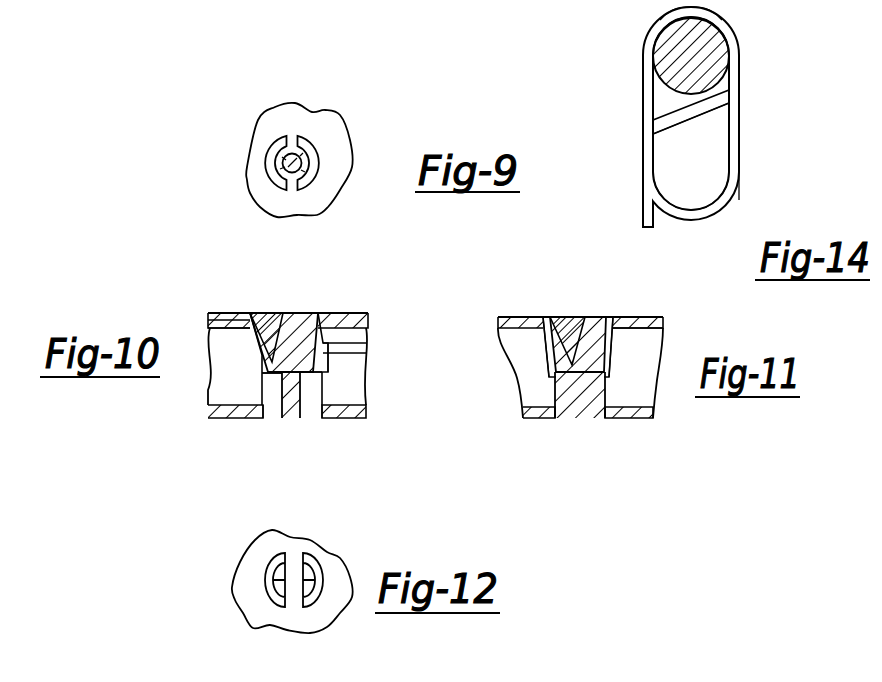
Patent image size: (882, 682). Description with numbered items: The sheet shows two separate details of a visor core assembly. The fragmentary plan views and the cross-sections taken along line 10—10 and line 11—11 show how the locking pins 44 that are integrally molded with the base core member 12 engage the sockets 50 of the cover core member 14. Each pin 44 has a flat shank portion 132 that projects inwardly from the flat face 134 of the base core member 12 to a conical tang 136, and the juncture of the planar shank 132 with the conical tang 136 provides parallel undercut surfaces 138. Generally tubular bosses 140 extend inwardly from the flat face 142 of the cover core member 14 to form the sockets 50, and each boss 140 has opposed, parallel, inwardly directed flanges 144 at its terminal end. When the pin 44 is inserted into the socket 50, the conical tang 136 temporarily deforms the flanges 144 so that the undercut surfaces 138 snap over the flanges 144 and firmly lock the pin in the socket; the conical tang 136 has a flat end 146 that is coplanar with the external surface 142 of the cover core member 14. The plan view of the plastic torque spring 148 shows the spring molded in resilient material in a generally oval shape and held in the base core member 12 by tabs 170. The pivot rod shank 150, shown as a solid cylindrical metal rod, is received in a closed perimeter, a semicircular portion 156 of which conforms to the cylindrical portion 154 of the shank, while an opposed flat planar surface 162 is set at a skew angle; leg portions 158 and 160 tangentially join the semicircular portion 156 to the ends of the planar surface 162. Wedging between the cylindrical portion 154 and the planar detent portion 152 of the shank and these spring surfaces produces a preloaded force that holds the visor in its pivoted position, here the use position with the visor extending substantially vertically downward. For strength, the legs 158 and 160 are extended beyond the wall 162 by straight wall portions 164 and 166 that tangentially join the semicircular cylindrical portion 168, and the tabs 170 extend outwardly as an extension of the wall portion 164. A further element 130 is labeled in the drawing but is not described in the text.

In FIG. 9, the section line 10— 10 is at (228, 165).
In FIG. 10, the section line 11— 11 is at (307, 272).
In FIG. 9, the base core member 12 is at (323, 124).
In FIG. 10, the base core member 12 is at (241, 411).
In FIG. 11, the base core member 12 is at (632, 424).
In FIG. 12, the base core member 12 is at (330, 617).
In FIG. 14, the base core member 12 is at (801, 30).
In FIG. 10, the cover core member 14 is at (370, 312).
In FIG. 11, the cover core member 14 is at (523, 315).
In FIG. 10, the locking pin 44 is at (305, 403).
In FIG. 11, the locking pin 44 is at (603, 387).
In FIG. 12, the locking pin 44 is at (268, 587).
In FIG. 10, the socket 50 is at (328, 363).
In FIG. 11, the socket 50 is at (622, 340).
In FIG. 14, the upper member 130 is at (721, 10).
In FIG. 9, the flat shank portion 132 is at (290, 136).
In FIG. 10, the flat shank portion 132 is at (282, 378).
In FIG. 11, the flat shank portion 132 is at (555, 420).
In FIG. 12, the flat shank portion 132 is at (310, 550).
In FIG. 10, the flat face of base core member 134 is at (332, 418).
In FIG. 11, the flat face of base core member 134 is at (628, 420).
In FIG. 14, the flat face of base core member 134 is at (613, 30).
In FIG. 9, the conical tang 136 is at (305, 148).
In FIG. 10, the conical tang 136 is at (315, 318).
In FIG. 11, the conical tang 136 is at (558, 317).
In FIG. 10, the undercut surfaces 138 is at (267, 374).
In FIG. 10, the tubular boss 140 is at (330, 342).
In FIG. 11, the tubular boss 140 is at (547, 350).
In FIG. 10, the flat face of cover core member 142 is at (243, 327).
In FIG. 11, the flat face of cover core member 142 is at (608, 317).
In FIG. 10, the flanges 144 is at (208, 320).
In FIG. 9, the flat end 146 is at (275, 173).
In FIG. 10, the flat end 146 is at (297, 312).
In FIG. 11, the flat end 146 is at (577, 317).
In FIG. 14, the torque spring 148 is at (742, 57).
In FIG. 14, the pivot rod shank 150 is at (679, 57).
In FIG. 14, the planar detent portion 152 is at (703, 32).
In FIG. 14, the cylindrical portion 154 is at (663, 84).
In FIG. 14, the semicircular portion 156 is at (678, 12).
In FIG. 14, the leg portion 158 is at (643, 82).
In FIG. 14, the leg portion 160 is at (738, 88).
In FIG. 14, the flat planar surface 162 is at (692, 118).
In FIG. 14, the straight wall portion 164 is at (643, 165).
In FIG. 14, the straight wall portion 166 is at (742, 172).
In FIG. 14, the semicircular cylindrical portion 168 is at (727, 207).
In FIG. 14, the tabs 170 is at (648, 210).